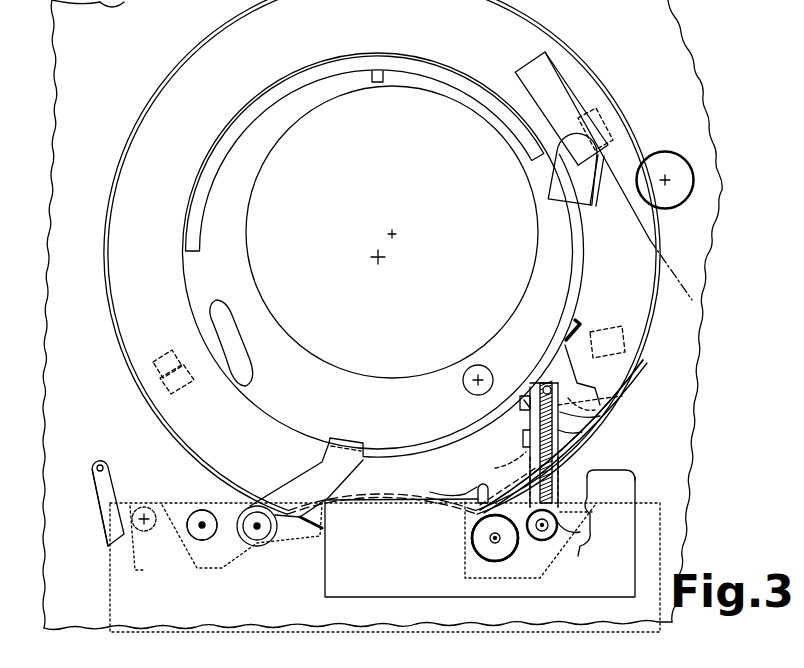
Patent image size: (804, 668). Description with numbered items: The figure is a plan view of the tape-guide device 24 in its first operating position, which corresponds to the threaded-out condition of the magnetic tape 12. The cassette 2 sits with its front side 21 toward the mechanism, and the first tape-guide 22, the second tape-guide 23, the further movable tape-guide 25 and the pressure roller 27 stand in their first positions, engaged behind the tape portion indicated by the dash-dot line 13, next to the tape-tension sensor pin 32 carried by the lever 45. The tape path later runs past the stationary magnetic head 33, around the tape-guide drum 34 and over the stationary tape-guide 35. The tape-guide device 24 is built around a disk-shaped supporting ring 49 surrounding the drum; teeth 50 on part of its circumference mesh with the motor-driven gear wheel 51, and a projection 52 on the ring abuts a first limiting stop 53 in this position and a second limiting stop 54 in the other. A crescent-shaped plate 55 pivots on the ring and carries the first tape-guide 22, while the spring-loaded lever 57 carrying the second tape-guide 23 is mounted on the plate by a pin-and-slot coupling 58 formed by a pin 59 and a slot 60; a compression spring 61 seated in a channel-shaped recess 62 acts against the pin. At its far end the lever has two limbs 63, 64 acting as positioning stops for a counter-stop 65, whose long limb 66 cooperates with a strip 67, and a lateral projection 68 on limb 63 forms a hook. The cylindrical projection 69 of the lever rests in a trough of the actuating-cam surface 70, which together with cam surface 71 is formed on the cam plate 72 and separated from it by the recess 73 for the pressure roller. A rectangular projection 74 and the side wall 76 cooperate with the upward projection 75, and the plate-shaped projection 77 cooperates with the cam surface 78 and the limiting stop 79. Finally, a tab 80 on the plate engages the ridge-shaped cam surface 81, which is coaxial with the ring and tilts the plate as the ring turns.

The cassette 2 is at (106, 582).
The magnetic tape 12 is at (136, 555).
The dash-dot line 13 is at (218, 508).
The front side of the cassette 21 is at (126, 503).
The first tape-guide 22 is at (258, 540).
The second tape-guide 23 is at (546, 541).
The tape-guide device 24 is at (158, 430).
The further movable tape-guide 25 is at (202, 508).
The pressure roller 27 is at (486, 562).
The tape-tension sensor pin 32 is at (100, 458).
The stationary magnetic head 33 is at (596, 198).
The tape-guide drum 34 is at (266, 254).
The stationary tape-guide 35 is at (464, 383).
The lever 45 is at (98, 497).
The supporting ring 49 is at (152, 154).
The teeth 50 is at (170, 80).
The gear wheel 51 is at (672, 158).
The projection 52 is at (160, 358).
The first limiting stop 53 is at (186, 394).
The second limiting stop 54 is at (614, 330).
The crescent-shaped plate 55 is at (538, 78).
The lever 57 is at (570, 466).
The pin-and-slot coupling 58 is at (538, 384).
The pin 59 is at (547, 378).
The slot 60 is at (574, 433).
The compression spring 61 is at (596, 414).
The channel-shaped recess 62 is at (572, 481).
The limb 63 is at (538, 405).
The limb 64 is at (604, 398).
The counter-stop 65 is at (570, 383).
The long limb 66 is at (576, 322).
The strip 67 is at (522, 472).
The lateral projection 68 is at (524, 400).
The cylindrical projection 69 is at (586, 517).
The actuating-cam surface 70 is at (572, 530).
The actuating-cam surface 71 is at (452, 492).
The cam plate 72 is at (326, 592).
The recess 73 is at (473, 548).
The rectangular lateral projection 74 is at (528, 442).
The upward projection 75 is at (480, 486).
The side wall 76 is at (508, 460).
The plate-shaped lateral projection 77 is at (622, 382).
The upward projection 78 is at (242, 360).
The limiting stop 79 is at (377, 83).
The tab 80 is at (346, 440).
The ridge-shaped cam surface 81 is at (216, 160).